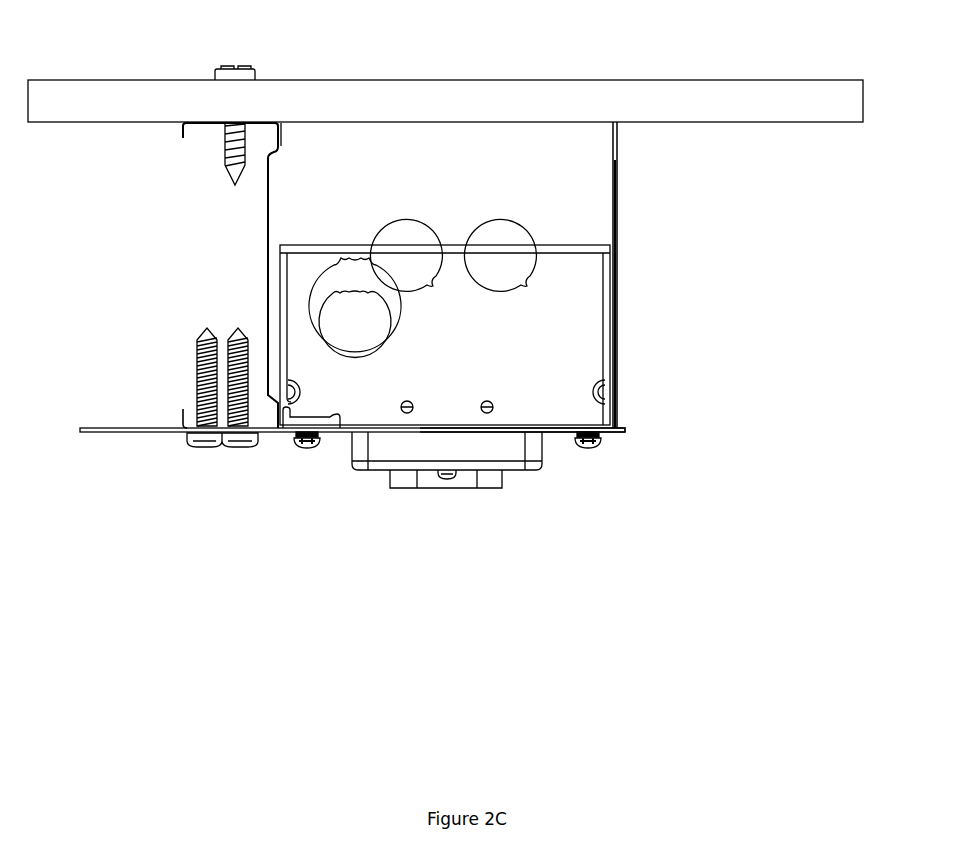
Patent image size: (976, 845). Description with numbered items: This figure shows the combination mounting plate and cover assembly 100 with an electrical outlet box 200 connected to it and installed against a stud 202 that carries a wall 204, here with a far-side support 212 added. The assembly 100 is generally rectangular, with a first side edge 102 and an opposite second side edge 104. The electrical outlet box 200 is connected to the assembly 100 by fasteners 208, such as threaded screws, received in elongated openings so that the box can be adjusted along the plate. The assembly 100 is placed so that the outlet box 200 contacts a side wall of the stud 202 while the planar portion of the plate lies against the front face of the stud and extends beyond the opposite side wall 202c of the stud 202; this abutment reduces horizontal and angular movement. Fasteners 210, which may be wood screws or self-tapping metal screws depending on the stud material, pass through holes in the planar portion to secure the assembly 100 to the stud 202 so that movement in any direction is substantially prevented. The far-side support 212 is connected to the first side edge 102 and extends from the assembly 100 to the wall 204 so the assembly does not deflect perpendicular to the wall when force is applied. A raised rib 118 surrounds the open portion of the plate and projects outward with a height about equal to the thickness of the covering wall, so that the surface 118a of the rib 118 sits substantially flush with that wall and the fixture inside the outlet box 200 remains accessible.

The wall 204 is at (442, 95).
The stud 202 is at (268, 222).
The opposite side wall of stud 202c is at (183, 415).
The far-side support 212 is at (617, 180).
The electrical outlet box 200 is at (415, 262).
The second side edge 104 is at (80, 430).
The first side edge 102 is at (625, 432).
The fasteners 210 is at (240, 447).
The fasteners 208 is at (308, 450).
The combination mounting plate and cover assembly 100 is at (330, 435).
The raised rib 118 is at (447, 514).
The surface of rib 118a is at (522, 470).